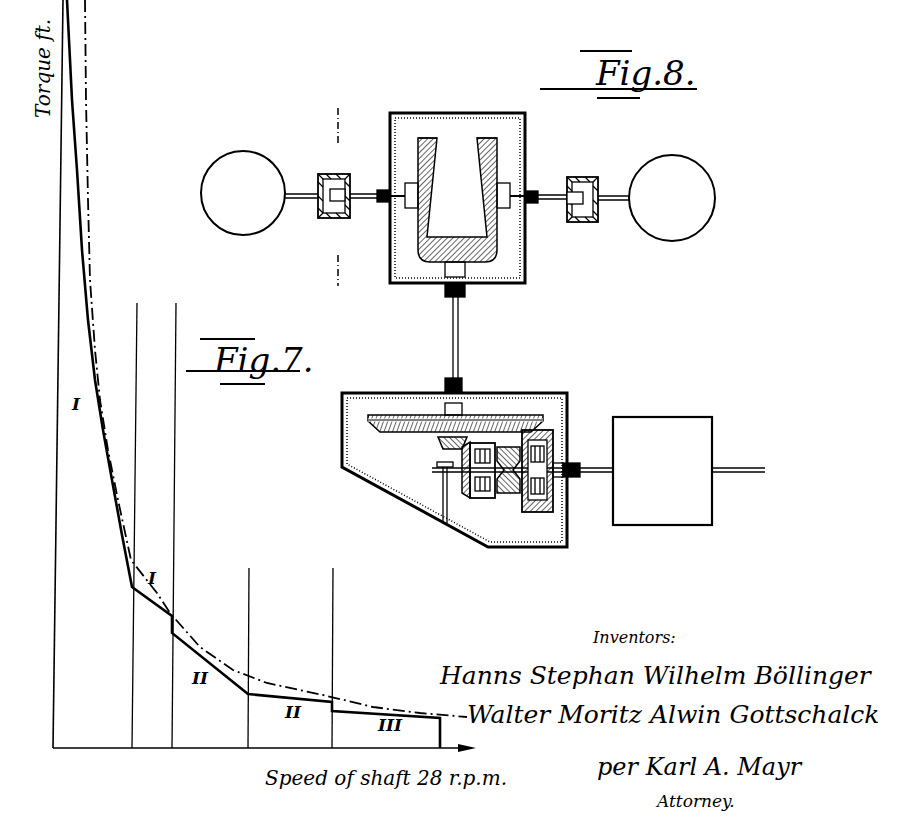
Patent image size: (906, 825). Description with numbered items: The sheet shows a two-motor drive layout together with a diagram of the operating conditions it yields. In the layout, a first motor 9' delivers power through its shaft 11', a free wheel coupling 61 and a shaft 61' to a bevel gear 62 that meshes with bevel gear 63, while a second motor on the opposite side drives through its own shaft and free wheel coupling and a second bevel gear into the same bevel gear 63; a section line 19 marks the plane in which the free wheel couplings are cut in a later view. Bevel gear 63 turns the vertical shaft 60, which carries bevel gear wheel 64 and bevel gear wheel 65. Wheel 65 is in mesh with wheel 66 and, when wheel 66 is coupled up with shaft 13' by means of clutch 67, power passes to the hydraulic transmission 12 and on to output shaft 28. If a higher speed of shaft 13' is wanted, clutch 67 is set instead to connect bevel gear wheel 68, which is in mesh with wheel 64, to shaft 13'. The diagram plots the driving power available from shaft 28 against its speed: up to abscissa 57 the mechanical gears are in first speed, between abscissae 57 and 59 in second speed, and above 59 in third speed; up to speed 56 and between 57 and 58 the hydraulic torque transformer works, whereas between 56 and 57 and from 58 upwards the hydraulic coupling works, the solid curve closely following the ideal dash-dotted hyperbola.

In FIG. 7, the abscissa (speed) 56 is at (138, 305).
In FIG. 7, the abscissa (speed) 57 is at (177, 307).
In FIG. 7, the abscissa (speed) 58 is at (250, 602).
In FIG. 7, the abscissa (speed) 59 is at (334, 605).
In FIG. 8, the motor 9' is at (243, 179).
In FIG. 8, the shaft 11' is at (308, 170).
In FIG. 8, the section line (Fig. 19) 19 is at (343, 196).
In FIG. 8, the free wheel coupling 61 is at (334, 214).
In FIG. 8, the shaft 61' is at (370, 208).
In FIG. 8, the bevel gear 62 is at (430, 142).
In FIG. 8, the bevel gear 63 is at (440, 258).
In FIG. 8, the shaft 60 is at (459, 310).
In FIG. 8, the bevel gear wheel 64 is at (398, 428).
In FIG. 8, the bevel gear wheel 65 is at (438, 443).
In FIG. 8, the wheel 66 is at (468, 495).
In FIG. 8, the clutch 67 is at (513, 487).
In FIG. 8, the bevel gear wheel 68 is at (530, 508).
In FIG. 8, the shaft 13' is at (577, 440).
In FIG. 8, the hydraulic transmission 12 is at (662, 471).
In FIG. 8, the shaft 28 is at (736, 466).